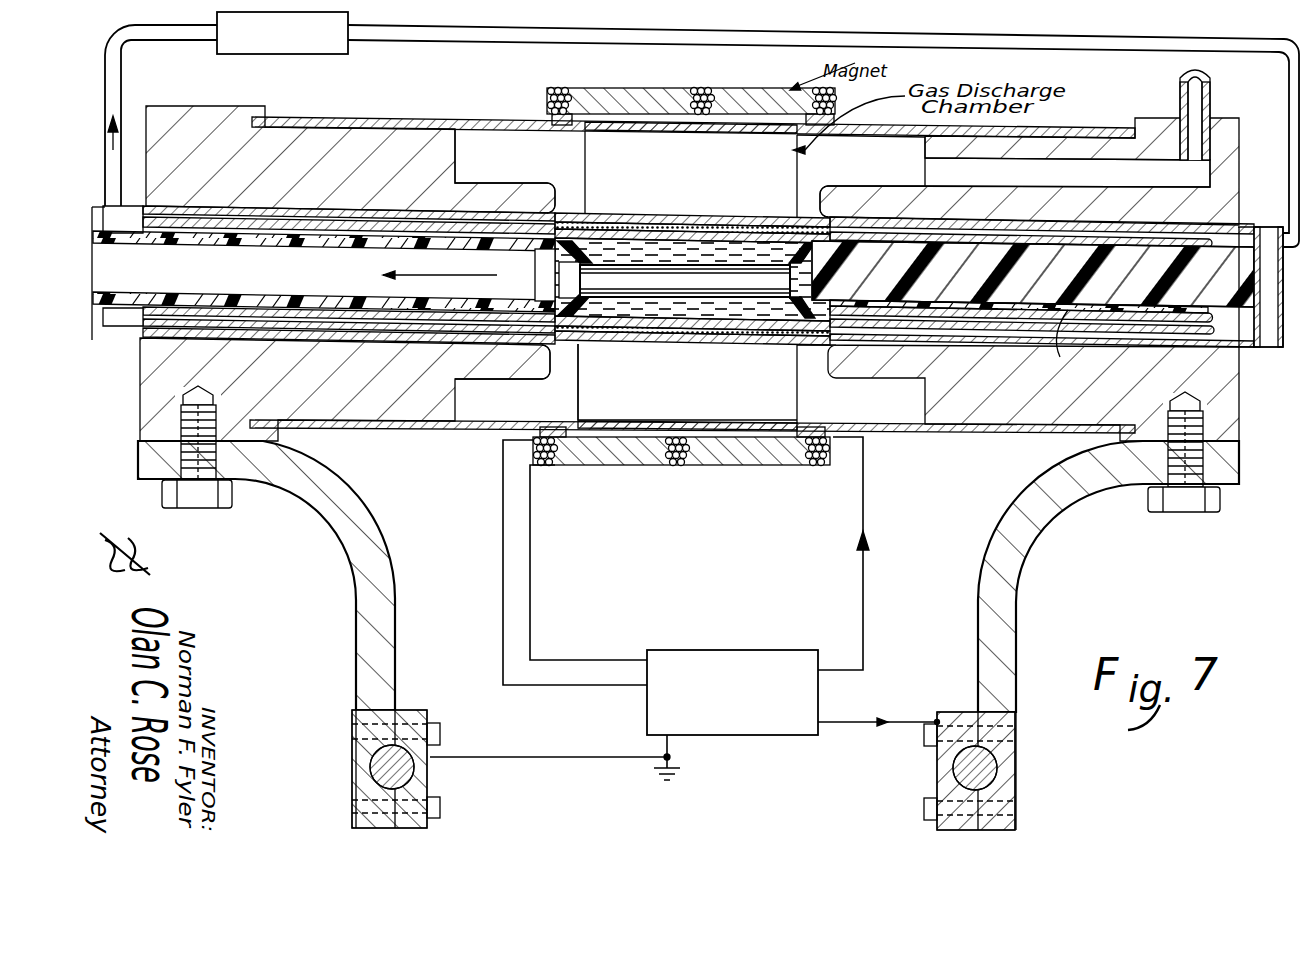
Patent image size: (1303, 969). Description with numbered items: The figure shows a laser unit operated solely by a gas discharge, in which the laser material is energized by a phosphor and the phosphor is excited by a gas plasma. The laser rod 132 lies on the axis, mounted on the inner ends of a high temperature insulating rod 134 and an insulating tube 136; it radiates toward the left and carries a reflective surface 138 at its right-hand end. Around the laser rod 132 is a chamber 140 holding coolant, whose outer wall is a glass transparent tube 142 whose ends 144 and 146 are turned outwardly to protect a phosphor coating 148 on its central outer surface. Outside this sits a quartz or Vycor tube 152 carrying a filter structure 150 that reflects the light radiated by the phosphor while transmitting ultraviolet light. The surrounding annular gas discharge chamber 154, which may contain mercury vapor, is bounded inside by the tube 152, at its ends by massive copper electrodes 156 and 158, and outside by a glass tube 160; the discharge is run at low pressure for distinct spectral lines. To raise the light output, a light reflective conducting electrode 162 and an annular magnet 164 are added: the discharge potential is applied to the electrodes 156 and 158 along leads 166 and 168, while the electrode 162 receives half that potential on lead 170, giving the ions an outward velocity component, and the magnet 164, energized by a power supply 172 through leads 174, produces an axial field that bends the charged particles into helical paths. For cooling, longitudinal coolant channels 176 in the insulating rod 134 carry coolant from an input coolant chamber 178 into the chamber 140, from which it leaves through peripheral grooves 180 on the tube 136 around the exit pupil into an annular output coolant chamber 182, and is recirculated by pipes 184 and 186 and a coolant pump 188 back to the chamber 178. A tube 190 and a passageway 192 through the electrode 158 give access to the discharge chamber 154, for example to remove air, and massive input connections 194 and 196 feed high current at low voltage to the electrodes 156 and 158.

The laser rod 132 is at (592, 305).
The insulating rod 134 is at (593, 222).
The insulating tube 136 is at (497, 275).
The reflective surface 138 is at (793, 268).
The chamber 140 is at (685, 292).
The transparent tube 142 is at (788, 273).
The end of the tube 144 is at (1193, 346).
The end of the tube 146 is at (129, 333).
The phosphor coating 148 is at (646, 272).
The filter structure 150 is at (568, 346).
The quartz or Vycor tube 152 is at (588, 347).
The gas discharge chamber 154 is at (861, 160).
The copper electrode 156 is at (518, 183).
The copper electrode 158 is at (904, 193).
The glass tube 160 is at (1040, 133).
The light reflective conducting electrode 162 is at (612, 133).
The magnet 164 is at (570, 88).
The lead 166 is at (493, 757).
The lead 168 is at (858, 722).
The lead 170 is at (862, 598).
The power supply 172 is at (738, 650).
The leads 174 is at (512, 534).
The coolant channels 176 is at (983, 306).
The coolant chamber 178 is at (1268, 320).
The peripheral grooves 180 is at (345, 225).
The annular output coolant chamber 182 is at (140, 233).
The pipe 184 is at (122, 84).
The pipe 186 is at (437, 42).
The coolant pump 188 is at (349, 23).
The tube 190 is at (1180, 93).
The passageway 192 is at (1067, 172).
The input connection 194 is at (357, 565).
The input connection 196 is at (1008, 603).